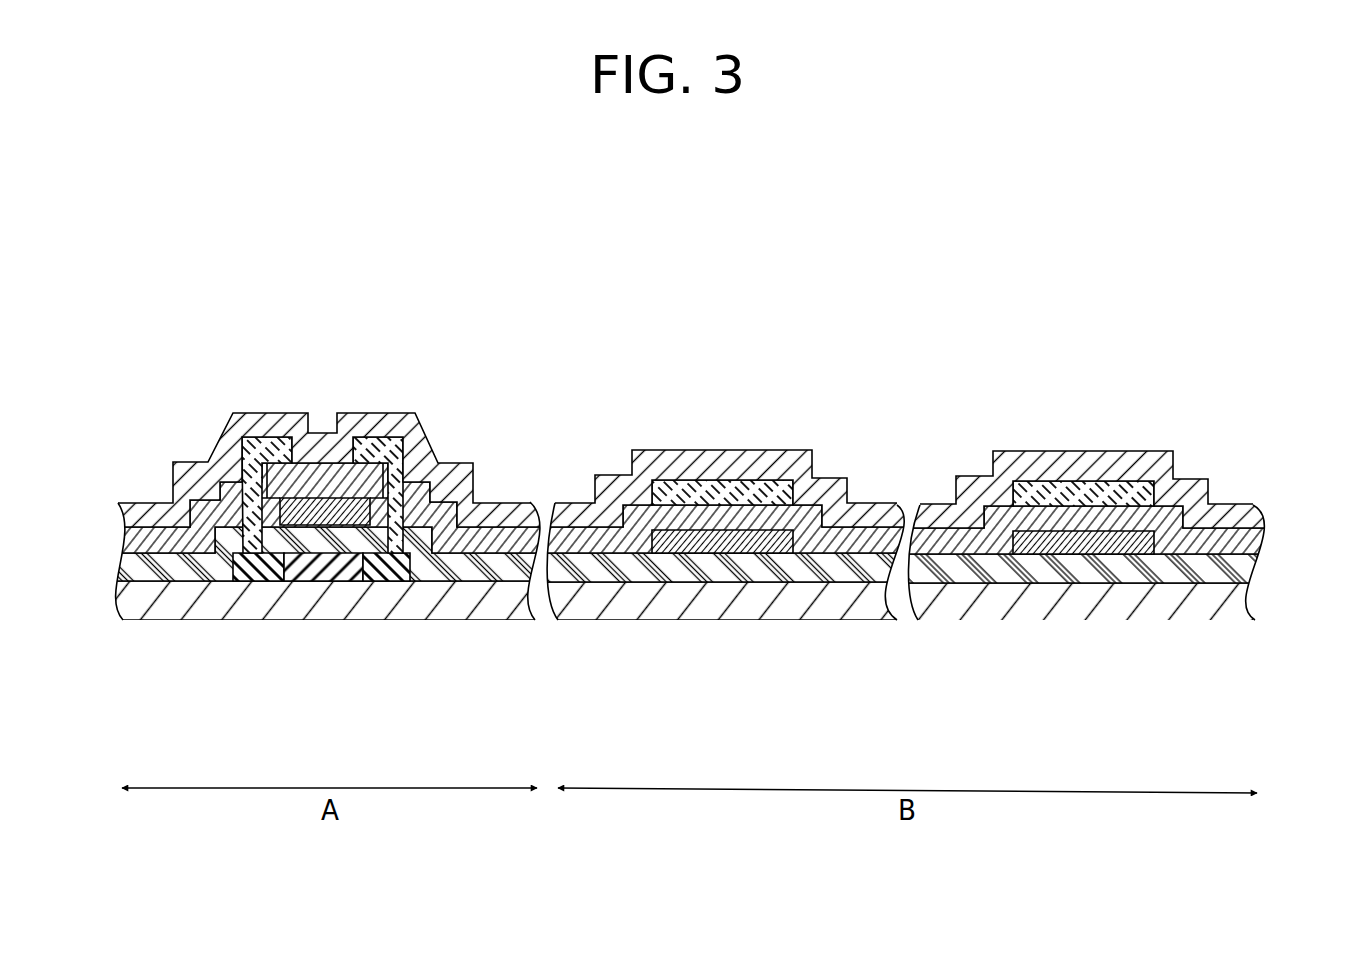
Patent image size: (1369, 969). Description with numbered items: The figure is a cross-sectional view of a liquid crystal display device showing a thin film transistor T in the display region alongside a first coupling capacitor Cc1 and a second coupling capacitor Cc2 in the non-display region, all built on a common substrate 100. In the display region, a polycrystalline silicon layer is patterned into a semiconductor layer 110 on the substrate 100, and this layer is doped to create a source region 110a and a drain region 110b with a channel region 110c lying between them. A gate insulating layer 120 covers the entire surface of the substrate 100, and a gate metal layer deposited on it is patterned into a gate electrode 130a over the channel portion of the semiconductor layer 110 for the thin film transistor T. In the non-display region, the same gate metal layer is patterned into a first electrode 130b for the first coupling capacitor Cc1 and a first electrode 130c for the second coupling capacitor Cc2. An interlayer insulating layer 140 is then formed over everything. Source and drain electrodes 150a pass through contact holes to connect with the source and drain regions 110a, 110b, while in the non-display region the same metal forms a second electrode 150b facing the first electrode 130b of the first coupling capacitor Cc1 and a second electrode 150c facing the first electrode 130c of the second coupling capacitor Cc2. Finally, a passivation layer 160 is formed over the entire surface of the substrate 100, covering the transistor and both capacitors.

The substrate 100 is at (1245, 600).
The semiconductor layer 110 is at (327, 642).
The source region 110a is at (245, 568).
The drain region 110b is at (395, 619).
The channel region 110c is at (318, 568).
The gate insulating layer 120 is at (1248, 578).
The gate electrode 130a is at (330, 510).
The first electrode of first coupling capacitor 130b is at (722, 535).
The first electrode of second coupling capacitor 130c is at (1082, 535).
The interlayer insulating layer 140 is at (1262, 548).
The source and drain electrodes 150a is at (258, 442).
The second electrode of first coupling capacitor 150b is at (688, 485).
The second electrode of second coupling capacitor 150c is at (1048, 485).
The passivation layer 160 is at (1262, 517).
The thin film transistor T is at (118, 415).
The first coupling capacitor Cc1 is at (588, 418).
The second coupling capacitor Cc2 is at (938, 418).